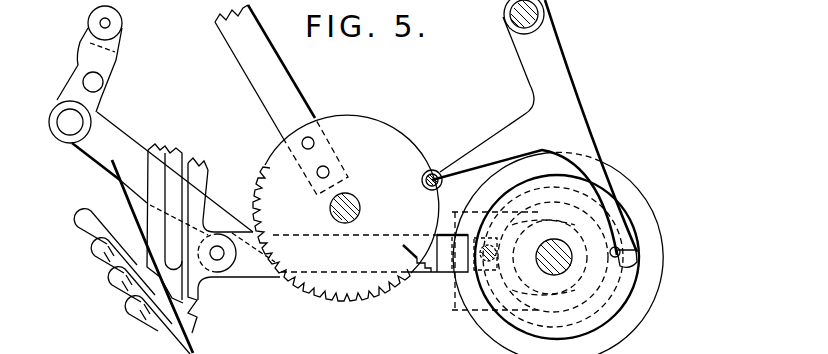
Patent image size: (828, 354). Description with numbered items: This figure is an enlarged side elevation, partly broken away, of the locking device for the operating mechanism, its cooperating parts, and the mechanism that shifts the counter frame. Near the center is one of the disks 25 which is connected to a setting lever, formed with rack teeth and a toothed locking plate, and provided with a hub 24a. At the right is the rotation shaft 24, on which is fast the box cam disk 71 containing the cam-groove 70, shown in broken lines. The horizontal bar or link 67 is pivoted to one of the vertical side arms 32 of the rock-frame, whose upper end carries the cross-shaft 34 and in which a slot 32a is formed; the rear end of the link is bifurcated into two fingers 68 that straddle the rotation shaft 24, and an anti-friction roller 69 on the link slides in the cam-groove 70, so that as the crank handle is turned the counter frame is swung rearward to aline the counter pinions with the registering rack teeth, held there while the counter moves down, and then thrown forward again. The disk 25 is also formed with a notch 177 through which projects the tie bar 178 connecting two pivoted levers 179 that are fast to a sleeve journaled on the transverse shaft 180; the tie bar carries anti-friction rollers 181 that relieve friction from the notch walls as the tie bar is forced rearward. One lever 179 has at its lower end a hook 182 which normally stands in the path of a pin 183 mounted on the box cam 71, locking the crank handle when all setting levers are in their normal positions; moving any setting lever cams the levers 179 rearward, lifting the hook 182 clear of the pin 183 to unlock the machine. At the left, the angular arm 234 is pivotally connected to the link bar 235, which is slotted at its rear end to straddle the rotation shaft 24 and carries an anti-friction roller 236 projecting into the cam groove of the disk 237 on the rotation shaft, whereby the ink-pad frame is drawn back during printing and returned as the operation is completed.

The rotation shaft 24 is at (260, 98).
The hub 24a is at (351, 200).
The disk 25 is at (360, 307).
The side arm 32 is at (150, 212).
The slot 32a is at (187, 186).
The cross-shaft 34 is at (186, 287).
The horizontal bar or link 67 is at (407, 233).
The fingers 68 is at (563, 288).
The anti-friction roller 69 is at (483, 262).
The cam-groove 70 is at (598, 281).
The disk 71 is at (620, 303).
The notch 177 is at (424, 175).
The tie bar 178 is at (434, 172).
The lever 179 is at (533, 112).
The transverse shaft 180 is at (545, 13).
The anti-friction rollers 181 is at (441, 173).
The hook 182 is at (638, 258).
The pin 183 is at (622, 250).
The angular arm 234 is at (97, 74).
The link bar 235 is at (173, 187).
The anti-friction roller 236 is at (403, 245).
The disk 237 is at (477, 300).